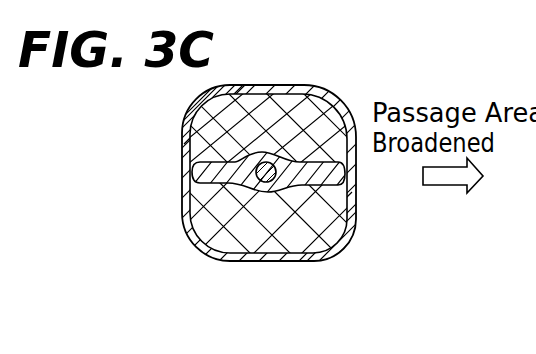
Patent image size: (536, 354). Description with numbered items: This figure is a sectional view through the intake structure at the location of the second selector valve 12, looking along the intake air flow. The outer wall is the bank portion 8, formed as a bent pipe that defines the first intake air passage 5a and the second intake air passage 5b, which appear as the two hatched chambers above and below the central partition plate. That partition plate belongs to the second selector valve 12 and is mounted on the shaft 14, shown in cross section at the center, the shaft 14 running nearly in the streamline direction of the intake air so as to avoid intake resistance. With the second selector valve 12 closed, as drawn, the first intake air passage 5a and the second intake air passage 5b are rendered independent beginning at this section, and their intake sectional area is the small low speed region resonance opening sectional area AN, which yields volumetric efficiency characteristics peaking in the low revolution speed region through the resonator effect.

The bank portion 8 is at (278, 85).
The second selector valve 12 is at (186, 221).
The first intake air passage 5a is at (335, 248).
The second intake air passage 5b is at (327, 92).
The sectional area AN is at (281, 124).
The shaft 14 is at (262, 186).